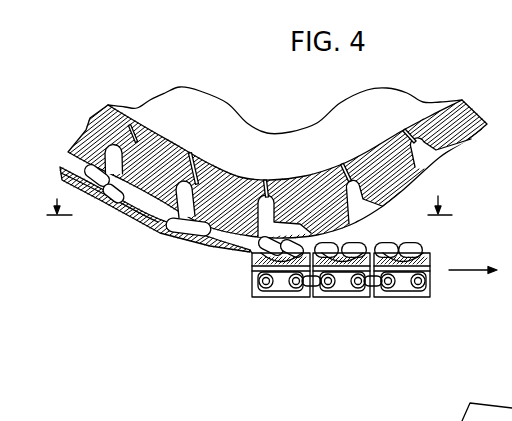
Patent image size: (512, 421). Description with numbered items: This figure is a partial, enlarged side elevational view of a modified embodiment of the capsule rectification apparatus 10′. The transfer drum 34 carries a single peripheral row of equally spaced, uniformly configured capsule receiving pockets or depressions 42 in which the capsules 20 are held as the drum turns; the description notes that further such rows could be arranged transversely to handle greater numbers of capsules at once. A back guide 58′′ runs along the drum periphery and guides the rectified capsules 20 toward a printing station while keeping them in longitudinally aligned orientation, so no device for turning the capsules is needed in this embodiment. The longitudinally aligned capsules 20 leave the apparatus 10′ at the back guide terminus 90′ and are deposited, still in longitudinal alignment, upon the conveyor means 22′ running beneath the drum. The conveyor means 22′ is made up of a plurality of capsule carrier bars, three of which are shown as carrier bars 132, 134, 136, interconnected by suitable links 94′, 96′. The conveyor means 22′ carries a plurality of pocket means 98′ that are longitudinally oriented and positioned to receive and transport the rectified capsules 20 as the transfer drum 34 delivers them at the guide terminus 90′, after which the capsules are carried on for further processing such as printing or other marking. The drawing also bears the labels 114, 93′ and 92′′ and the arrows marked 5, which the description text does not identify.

The capsule rectification apparatus 10′ is at (410, 93).
The transfer drum 34 is at (161, 143).
The capsules 20 is at (198, 207).
The capsule receiving pockets 42 is at (350, 188).
The slot 114 is at (270, 196).
The back guide 58′′ is at (145, 240).
The back guide terminus 90′ is at (252, 253).
The conveyor means 22′ is at (263, 305).
The capsule carrier bar 132 is at (298, 291).
The capsule carrier bar 134 is at (333, 286).
The capsule carrier bar 136 is at (394, 293).
The chain roller 93′ is at (283, 288).
The link 94′ is at (350, 286).
The link 96′ is at (420, 298).
The pocket means 98′ is at (431, 256).
The direction of movement 92′′ is at (468, 271).
The section line 5 is at (249, 197).